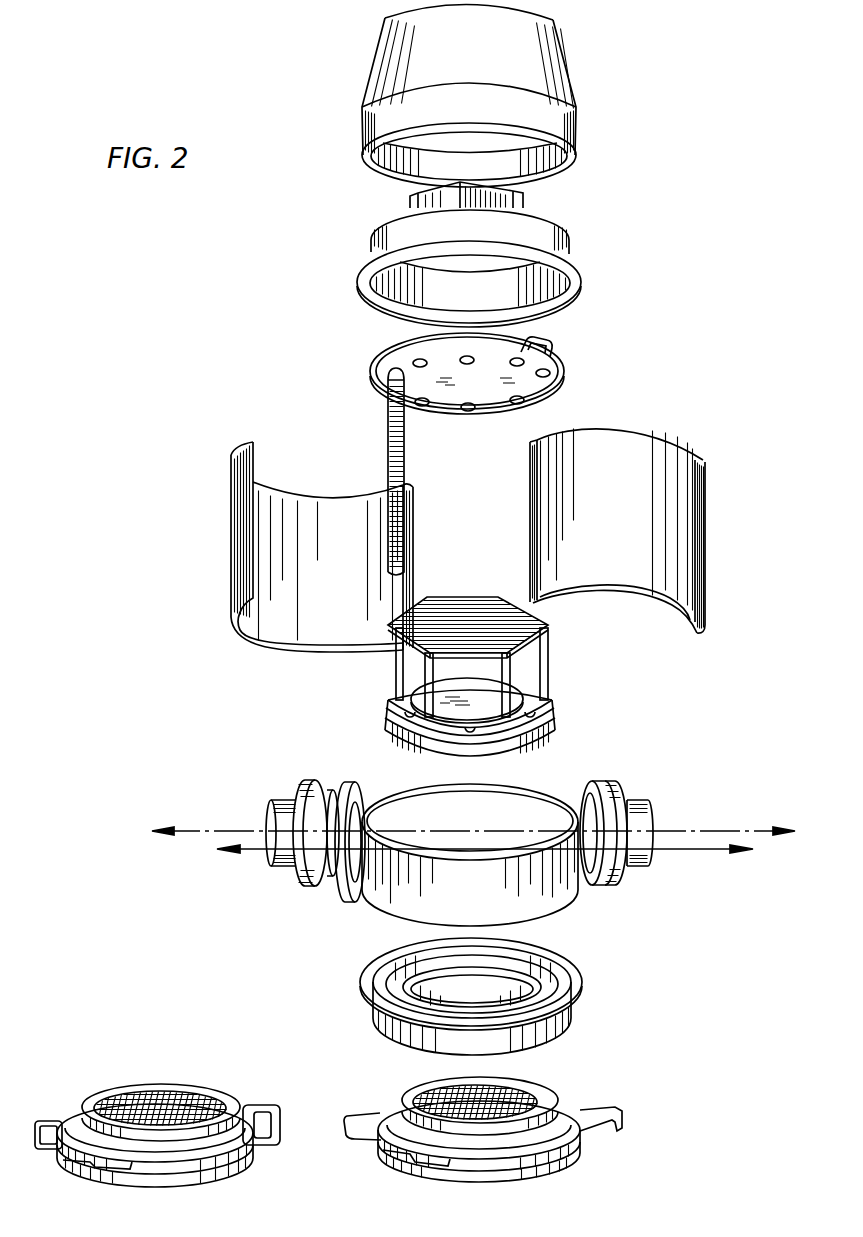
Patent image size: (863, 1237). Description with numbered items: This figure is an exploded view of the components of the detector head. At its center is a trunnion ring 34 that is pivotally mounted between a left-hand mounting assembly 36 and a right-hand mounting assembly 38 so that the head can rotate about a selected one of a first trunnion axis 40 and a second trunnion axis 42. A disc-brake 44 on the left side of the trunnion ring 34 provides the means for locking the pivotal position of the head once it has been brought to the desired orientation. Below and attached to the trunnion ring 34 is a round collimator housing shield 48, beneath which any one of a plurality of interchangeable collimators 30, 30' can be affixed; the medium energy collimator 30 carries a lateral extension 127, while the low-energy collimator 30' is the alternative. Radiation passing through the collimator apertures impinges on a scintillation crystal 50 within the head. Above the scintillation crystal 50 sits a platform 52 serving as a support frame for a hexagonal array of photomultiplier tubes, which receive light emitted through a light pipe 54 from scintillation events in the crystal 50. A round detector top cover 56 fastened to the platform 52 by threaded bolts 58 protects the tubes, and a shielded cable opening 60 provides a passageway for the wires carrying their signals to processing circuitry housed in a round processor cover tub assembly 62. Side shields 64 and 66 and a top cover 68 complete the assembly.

The top cover 68 is at (553, 68).
The round processor cover tub assembly 62 is at (362, 246).
The shielded cable opening 60 is at (552, 342).
The round detector top cover 56 is at (552, 392).
The threaded bolts 58 is at (388, 423).
The side shield 64 is at (240, 502).
The side shield 66 is at (697, 508).
The platform 52 is at (550, 650).
The light pipe 54 is at (522, 697).
The scintillation crystal 50 is at (392, 725).
The trunnion ring 34 is at (505, 786).
The left-hand mounting assembly 36 is at (282, 792).
The right-hand mounting assembly 38 is at (637, 788).
The first trunnion axis 40 is at (736, 828).
The second trunnion axis 42 is at (705, 848).
The disc-brake 44 is at (343, 892).
The round collimator housing shield 48 is at (583, 984).
The low-energy collimator 30' is at (178, 1135).
The medium energy collimator 30 is at (489, 1129).
The lateral extension 127 is at (607, 1108).